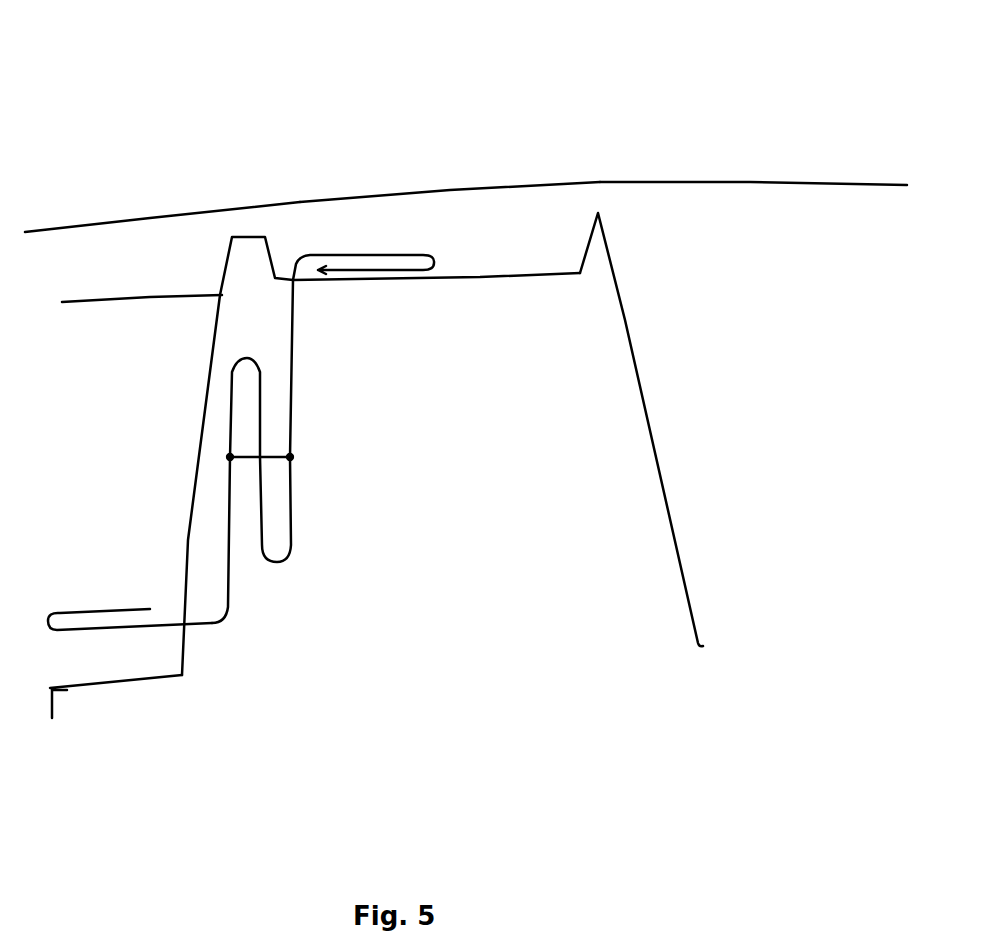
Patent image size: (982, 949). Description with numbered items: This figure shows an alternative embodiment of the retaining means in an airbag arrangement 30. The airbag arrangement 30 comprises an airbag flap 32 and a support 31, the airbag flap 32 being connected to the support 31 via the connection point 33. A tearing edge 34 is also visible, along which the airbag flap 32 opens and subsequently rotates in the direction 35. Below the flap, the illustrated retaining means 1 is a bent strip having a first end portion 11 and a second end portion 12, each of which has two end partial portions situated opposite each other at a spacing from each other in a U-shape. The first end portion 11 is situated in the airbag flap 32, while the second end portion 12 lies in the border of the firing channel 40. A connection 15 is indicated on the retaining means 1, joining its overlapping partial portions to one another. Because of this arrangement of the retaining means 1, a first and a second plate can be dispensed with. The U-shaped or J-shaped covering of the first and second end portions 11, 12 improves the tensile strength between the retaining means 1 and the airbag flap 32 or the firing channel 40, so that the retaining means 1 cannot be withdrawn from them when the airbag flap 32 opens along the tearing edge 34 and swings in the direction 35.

The airbag arrangement 30 is at (181, 107).
The support 31 is at (113, 201).
The airbag flap 32 is at (378, 198).
The connection point 33 is at (257, 213).
The tearing edge 34 is at (602, 182).
The direction 35 is at (530, 160).
The first end portion 11 is at (388, 288).
The second end portion 12 is at (105, 591).
The retaining means 1 is at (308, 418).
The connection 15 is at (299, 474).
The firing channel 40 is at (143, 685).